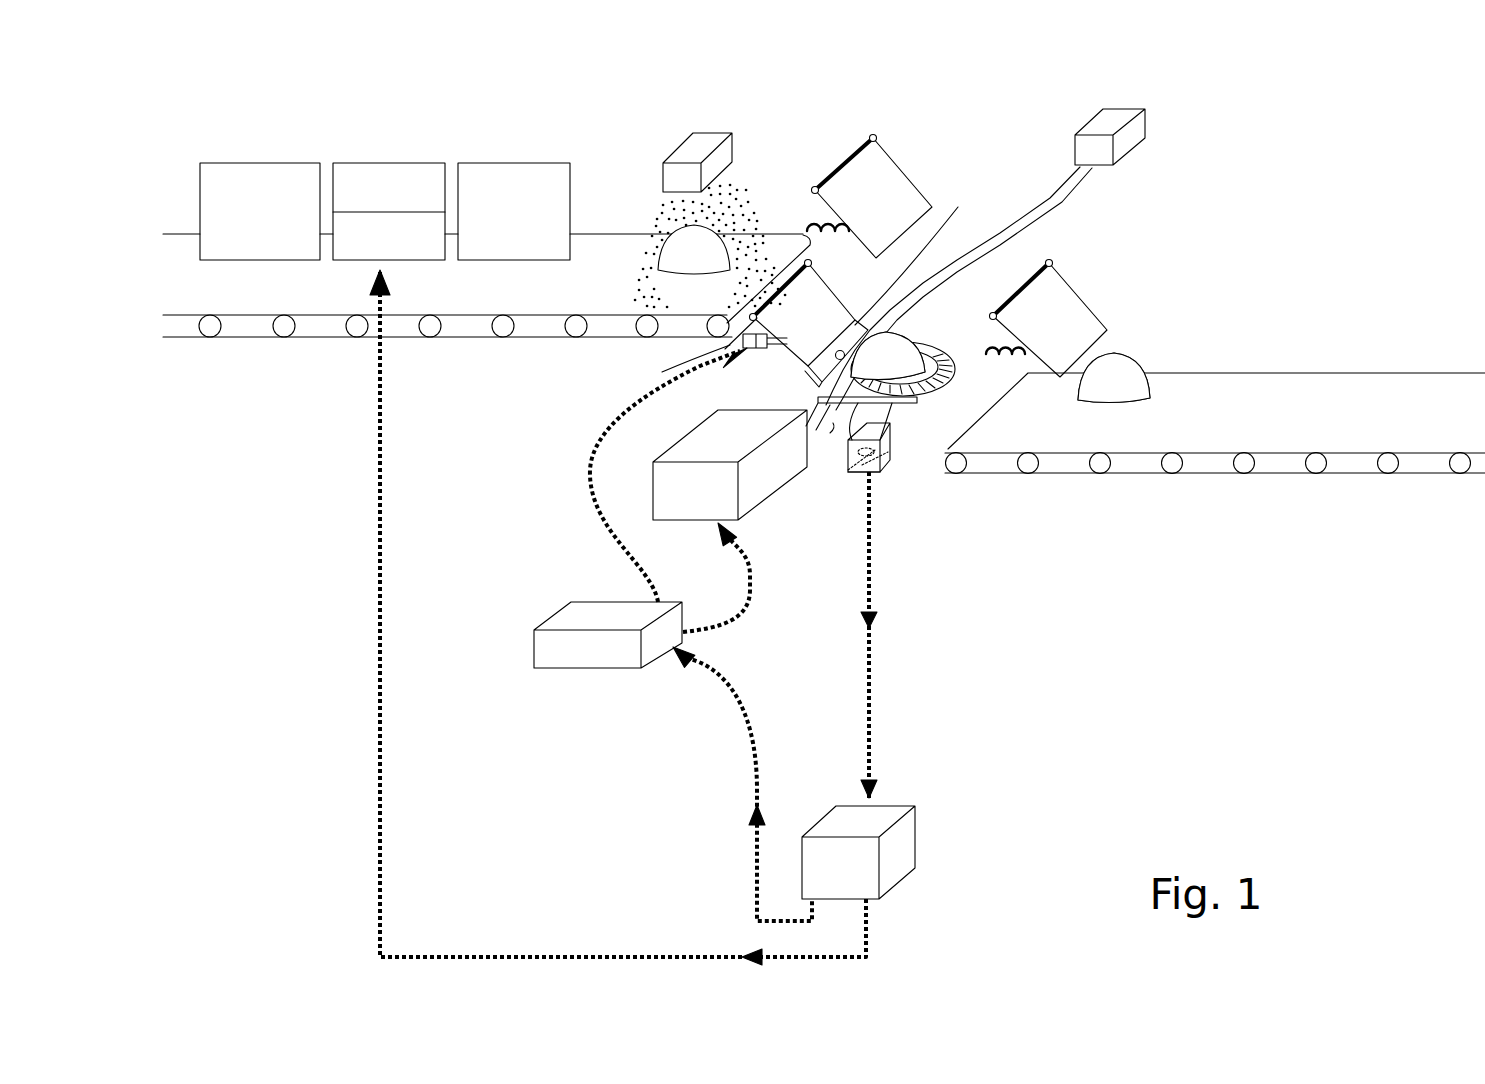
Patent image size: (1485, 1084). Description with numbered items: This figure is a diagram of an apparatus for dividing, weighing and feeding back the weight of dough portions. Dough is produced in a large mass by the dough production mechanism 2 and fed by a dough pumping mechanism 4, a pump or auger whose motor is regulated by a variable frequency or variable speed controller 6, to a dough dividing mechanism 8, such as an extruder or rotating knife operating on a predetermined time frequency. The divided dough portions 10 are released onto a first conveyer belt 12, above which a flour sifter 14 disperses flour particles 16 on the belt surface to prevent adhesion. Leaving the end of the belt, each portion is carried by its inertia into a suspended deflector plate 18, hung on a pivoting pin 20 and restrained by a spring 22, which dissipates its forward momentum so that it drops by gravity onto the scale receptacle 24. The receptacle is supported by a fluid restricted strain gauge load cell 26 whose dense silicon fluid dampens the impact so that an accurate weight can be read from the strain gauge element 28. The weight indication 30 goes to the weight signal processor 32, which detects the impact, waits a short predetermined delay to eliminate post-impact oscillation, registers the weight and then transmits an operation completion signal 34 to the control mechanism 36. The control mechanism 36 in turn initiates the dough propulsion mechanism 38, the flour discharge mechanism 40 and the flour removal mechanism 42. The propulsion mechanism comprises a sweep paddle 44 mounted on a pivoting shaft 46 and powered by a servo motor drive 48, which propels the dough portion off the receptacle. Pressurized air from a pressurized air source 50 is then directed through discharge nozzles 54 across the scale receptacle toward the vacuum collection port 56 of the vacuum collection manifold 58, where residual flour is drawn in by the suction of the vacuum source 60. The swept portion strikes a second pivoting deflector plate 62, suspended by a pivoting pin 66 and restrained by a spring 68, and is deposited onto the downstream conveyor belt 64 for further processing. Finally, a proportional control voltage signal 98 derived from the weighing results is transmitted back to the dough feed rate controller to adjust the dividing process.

The dough production mechanism 2 is at (284, 172).
The dough pumping mechanism 4 is at (386, 172).
The variable frequency or variable speed controller 6 is at (417, 250).
The dough dividing mechanism 8 is at (512, 172).
The dough portion 10 is at (685, 243).
The first conveyer belt 12 is at (587, 245).
The flour sifter 14 is at (720, 132).
The flour particles 16 is at (723, 205).
The deflector plate 18 is at (900, 188).
The pivoting pin 20 is at (871, 136).
The spring 22 is at (808, 228).
The scale receptacle 24 is at (833, 425).
The fluid restricted strain gauge load cell 26 is at (892, 468).
The strain gauge element 28 is at (858, 478).
The weight indication 30 is at (882, 620).
The weight signal processor 32 is at (905, 862).
The operation completion signal 34 is at (750, 815).
The control mechanism 36 is at (543, 652).
The dough propulsion mechanism 38 is at (826, 273).
The flour discharge mechanism 40 is at (946, 401).
The flour removal mechanism 42 is at (918, 255).
The sweep paddle 44 is at (836, 318).
The pivoting shaft 46 is at (680, 364).
The servo motor drive 48 is at (752, 350).
The pressurized air source 50 is at (935, 353).
The discharge nozzles 54 is at (880, 400).
The vacuum collection port 56 is at (959, 288).
The vacuum collection manifold 58 is at (808, 372).
The vacuum source 60 is at (1142, 125).
The pivoting deflector plate 62 is at (1078, 308).
The downstream conveyor belt 64 is at (1294, 397).
The pivoting pin 66 is at (1051, 264).
The spring 68 is at (1005, 362).
The control voltage signal 98 is at (752, 950).